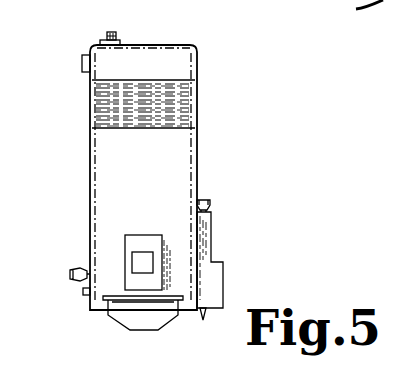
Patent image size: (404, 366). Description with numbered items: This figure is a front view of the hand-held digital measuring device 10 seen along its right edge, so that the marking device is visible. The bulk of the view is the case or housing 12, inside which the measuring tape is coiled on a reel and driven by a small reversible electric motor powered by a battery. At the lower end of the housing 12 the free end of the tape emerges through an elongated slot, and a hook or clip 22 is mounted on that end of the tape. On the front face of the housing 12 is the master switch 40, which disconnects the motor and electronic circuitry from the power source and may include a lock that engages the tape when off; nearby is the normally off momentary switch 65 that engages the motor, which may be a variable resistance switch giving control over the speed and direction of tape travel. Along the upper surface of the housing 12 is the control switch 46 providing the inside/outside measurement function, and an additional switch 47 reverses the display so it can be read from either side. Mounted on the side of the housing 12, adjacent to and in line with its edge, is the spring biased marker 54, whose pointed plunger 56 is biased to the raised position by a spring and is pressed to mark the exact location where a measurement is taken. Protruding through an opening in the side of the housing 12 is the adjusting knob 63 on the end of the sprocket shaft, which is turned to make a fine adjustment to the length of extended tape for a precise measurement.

The hand-held digital measuring device 10 is at (205, 72).
The housing 12 is at (185, 155).
The hook or clip 22 is at (140, 320).
The master switch 40 is at (126, 243).
The control switch 46 is at (112, 31).
The display reversing switch 47 is at (82, 62).
The spring biased marker 54 is at (205, 282).
The pointed plunger 56 is at (211, 200).
The adjusting knob 63 is at (68, 271).
The momentary switch 65 is at (86, 297).